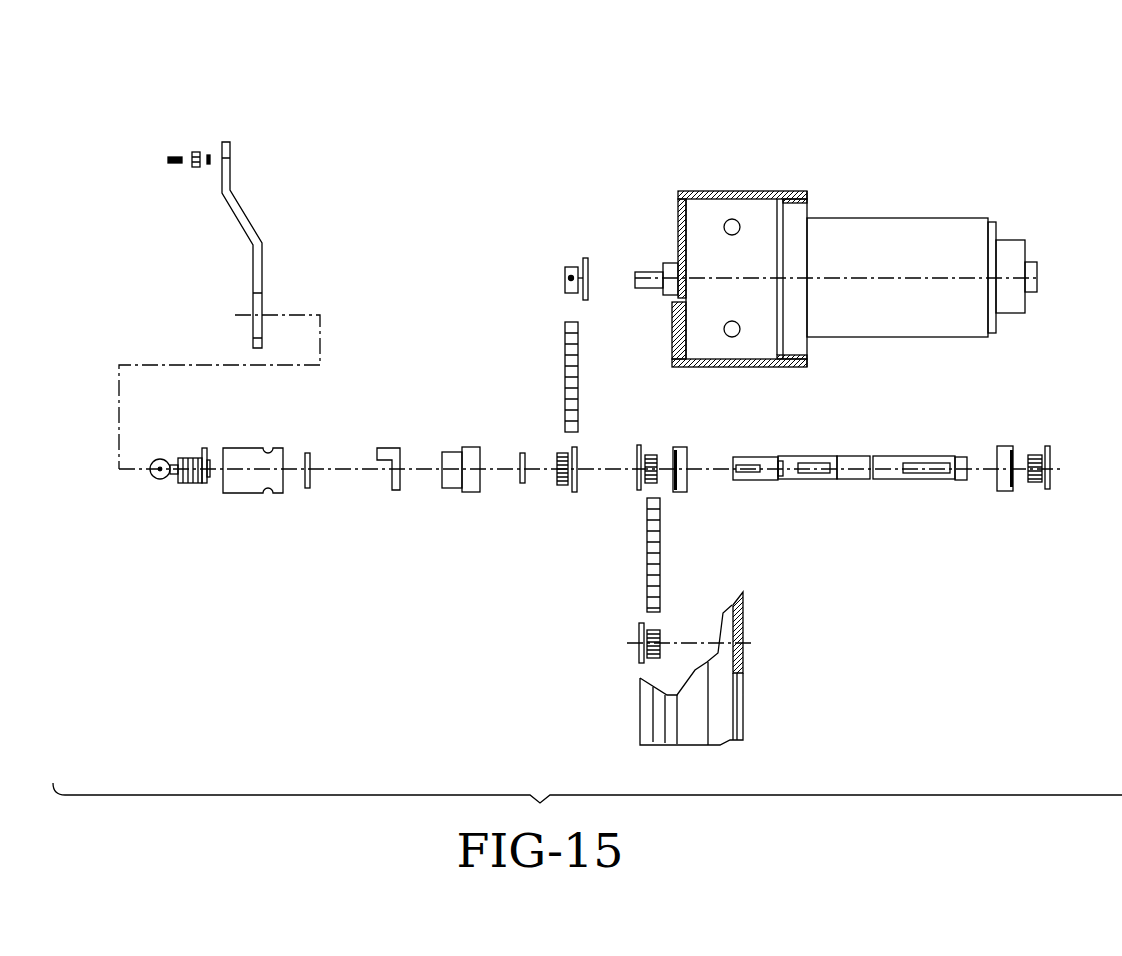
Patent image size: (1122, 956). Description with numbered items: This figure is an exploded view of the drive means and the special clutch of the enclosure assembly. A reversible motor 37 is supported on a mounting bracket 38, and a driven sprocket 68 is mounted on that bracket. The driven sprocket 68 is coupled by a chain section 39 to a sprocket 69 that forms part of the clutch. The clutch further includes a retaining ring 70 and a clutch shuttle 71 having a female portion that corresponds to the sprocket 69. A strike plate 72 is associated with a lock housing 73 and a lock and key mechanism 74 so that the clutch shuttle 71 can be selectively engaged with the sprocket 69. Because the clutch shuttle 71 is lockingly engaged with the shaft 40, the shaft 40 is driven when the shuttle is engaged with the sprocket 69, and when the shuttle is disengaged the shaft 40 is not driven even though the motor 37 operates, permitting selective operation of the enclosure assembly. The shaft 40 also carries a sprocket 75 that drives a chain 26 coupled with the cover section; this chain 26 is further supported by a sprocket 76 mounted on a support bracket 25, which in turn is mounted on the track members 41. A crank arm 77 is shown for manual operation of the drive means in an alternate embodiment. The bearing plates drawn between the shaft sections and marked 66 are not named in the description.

The support bracket 25 is at (742, 625).
The chain 26 is at (655, 548).
The reversible motor 37 is at (873, 323).
The mounting bracket 38 is at (790, 367).
The chain section 39 is at (570, 350).
The shaft 40 is at (852, 472).
The track members 41 is at (723, 713).
The bearing plate 66 is at (680, 447).
The driven sprocket 68 is at (572, 268).
The sprocket 69 is at (560, 455).
The retaining ring 70 is at (523, 483).
The clutch shuttle 71 is at (476, 492).
The strike plate 72 is at (395, 492).
The lock housing 73 is at (252, 448).
The lock and key mechanism 74 is at (188, 487).
The sprocket 75 is at (652, 455).
The sprocket 76 is at (648, 630).
The crank arm 77 is at (225, 173).